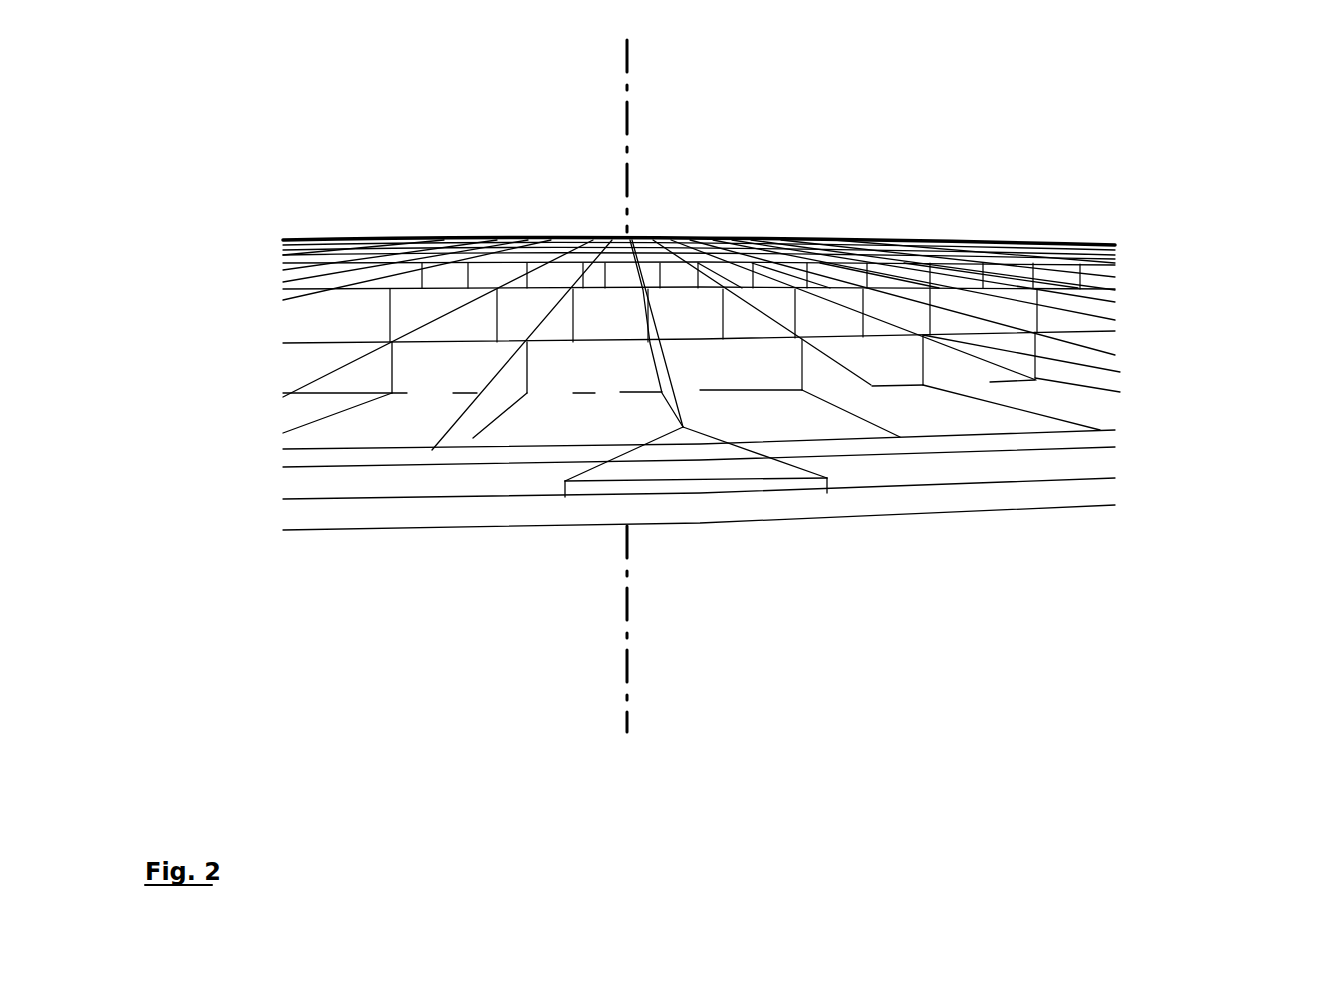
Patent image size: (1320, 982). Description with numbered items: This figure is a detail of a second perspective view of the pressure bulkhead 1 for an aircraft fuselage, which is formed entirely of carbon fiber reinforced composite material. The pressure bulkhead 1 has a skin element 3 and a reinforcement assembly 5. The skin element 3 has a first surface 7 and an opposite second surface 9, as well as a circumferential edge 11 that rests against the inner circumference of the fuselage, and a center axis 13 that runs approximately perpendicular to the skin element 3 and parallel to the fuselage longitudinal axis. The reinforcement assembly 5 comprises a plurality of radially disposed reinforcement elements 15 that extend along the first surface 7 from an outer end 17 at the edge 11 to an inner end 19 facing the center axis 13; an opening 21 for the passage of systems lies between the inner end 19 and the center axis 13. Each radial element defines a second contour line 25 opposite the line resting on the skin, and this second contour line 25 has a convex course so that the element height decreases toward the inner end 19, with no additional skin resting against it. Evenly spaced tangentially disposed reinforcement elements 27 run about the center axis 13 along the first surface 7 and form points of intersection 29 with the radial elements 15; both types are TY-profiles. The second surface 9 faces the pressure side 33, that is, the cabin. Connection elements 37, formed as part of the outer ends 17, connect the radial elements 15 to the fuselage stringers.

The pressure bulkhead 1 is at (1012, 162).
The skin element 3 is at (505, 432).
The reinforcement assembly 5 is at (547, 372).
The first surface 7 is at (525, 422).
The second surface 9 is at (420, 537).
The circumferential edge 11 is at (928, 463).
The center axis 13 is at (628, 121).
The radially disposed reinforcement elements 15 is at (1032, 308).
The outer end 17 is at (772, 320).
The inner end 19 is at (640, 236).
The opening 21 is at (621, 231).
The second contour line 25 is at (343, 367).
The tangentially disposed reinforcement elements 27 is at (690, 308).
The points of intersection 29 is at (420, 288).
The pressure side 33 is at (741, 569).
The connection elements 37 is at (690, 462).